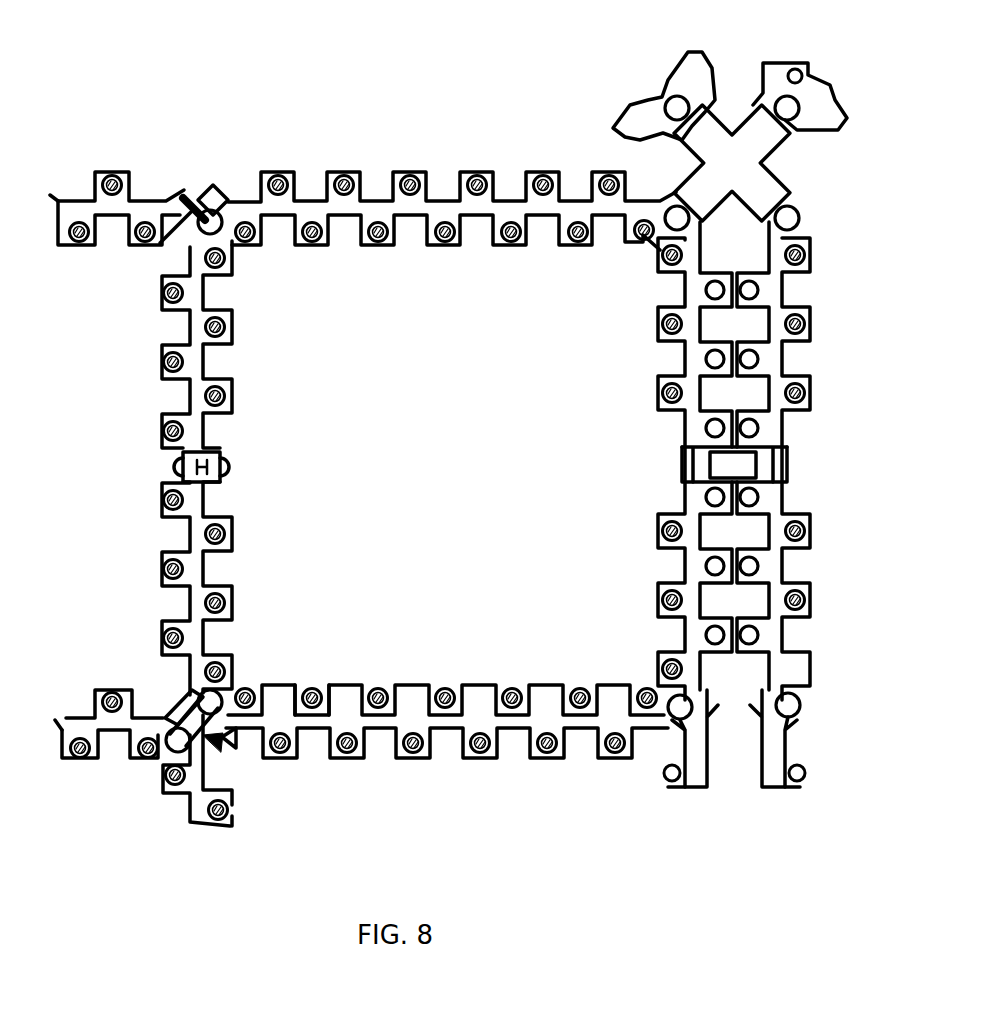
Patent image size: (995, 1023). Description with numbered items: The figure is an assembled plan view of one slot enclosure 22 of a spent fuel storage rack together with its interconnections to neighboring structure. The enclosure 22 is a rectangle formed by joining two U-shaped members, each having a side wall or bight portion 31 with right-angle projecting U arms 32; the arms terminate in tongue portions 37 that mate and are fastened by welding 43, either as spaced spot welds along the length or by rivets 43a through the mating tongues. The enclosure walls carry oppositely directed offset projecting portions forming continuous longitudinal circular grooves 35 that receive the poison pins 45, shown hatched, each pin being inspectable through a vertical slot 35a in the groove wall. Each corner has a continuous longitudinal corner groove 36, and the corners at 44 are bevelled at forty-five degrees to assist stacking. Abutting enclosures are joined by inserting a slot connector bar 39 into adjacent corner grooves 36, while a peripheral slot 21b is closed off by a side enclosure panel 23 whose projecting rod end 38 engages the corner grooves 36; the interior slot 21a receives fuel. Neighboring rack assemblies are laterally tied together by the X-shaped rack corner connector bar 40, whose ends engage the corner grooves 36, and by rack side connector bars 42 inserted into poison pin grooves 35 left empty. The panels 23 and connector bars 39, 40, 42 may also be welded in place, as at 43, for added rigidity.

The slot 21a is at (436, 476).
The slot along the periphery 21b is at (78, 498).
The slot enclosure 22 is at (712, 58).
The side enclosure panel 23 is at (72, 240).
The bight portion 31 is at (440, 198).
The U arms 32 is at (684, 355).
The circular grooves 35 is at (340, 695).
The vertical slot 35a is at (315, 684).
The corner groove 36 is at (220, 205).
The tongue portions 37 is at (214, 458).
The projecting rod end 38 is at (202, 208).
The slot connector bar 39 is at (160, 760).
The rack corner connector bar 40 is at (745, 164).
The rack side connector bar 42 is at (765, 638).
The welding 43 is at (200, 192).
The rivets 43a is at (222, 478).
The bevelled corners 44 is at (216, 750).
The poison pins 45 is at (163, 366).